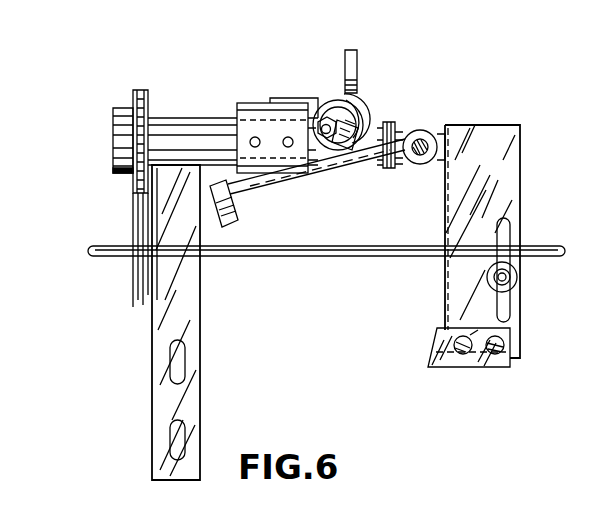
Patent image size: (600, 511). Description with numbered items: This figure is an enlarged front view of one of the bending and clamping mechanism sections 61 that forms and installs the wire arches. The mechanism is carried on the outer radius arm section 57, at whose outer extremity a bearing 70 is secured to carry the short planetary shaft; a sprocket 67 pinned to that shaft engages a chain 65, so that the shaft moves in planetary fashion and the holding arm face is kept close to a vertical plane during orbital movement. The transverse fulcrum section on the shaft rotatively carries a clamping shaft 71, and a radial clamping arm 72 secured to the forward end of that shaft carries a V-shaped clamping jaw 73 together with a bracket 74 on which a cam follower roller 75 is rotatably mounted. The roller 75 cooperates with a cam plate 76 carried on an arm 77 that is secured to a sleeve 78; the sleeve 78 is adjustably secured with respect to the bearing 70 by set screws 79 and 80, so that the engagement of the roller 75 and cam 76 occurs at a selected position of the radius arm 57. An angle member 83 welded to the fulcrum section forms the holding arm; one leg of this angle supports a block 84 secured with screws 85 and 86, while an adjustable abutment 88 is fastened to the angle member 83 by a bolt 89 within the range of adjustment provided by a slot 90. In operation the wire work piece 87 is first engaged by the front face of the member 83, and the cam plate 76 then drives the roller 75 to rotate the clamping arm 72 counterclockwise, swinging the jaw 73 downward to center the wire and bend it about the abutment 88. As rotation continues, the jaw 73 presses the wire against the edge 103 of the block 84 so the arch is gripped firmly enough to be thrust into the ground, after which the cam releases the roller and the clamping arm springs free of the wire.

The outer radius arm section 57 is at (197, 312).
The clamping mechanism section 61 is at (430, 123).
The chain 65 is at (133, 210).
The sprocket 67 is at (140, 92).
The bearing 70 is at (202, 120).
The clamping shaft 71 is at (423, 156).
The radial clamping arm 72 is at (312, 172).
The clamping jaw 73 is at (230, 226).
The bracket 74 is at (344, 153).
The cam follower roller 75 is at (356, 95).
The cam plate 76 is at (358, 63).
The arm 77 is at (318, 98).
The sleeve 78 is at (272, 146).
The set screw 79 is at (254, 148).
The set screw 80 is at (288, 148).
The angle member 83 is at (507, 241).
The block 84 is at (447, 367).
The screw 85 is at (467, 330).
The screw 86 is at (493, 353).
The wire work piece 87 is at (302, 258).
The adjustable abutment 88 is at (513, 289).
The bolt 89 is at (516, 280).
The slot 90 is at (510, 224).
The edge of block 103 is at (455, 344).